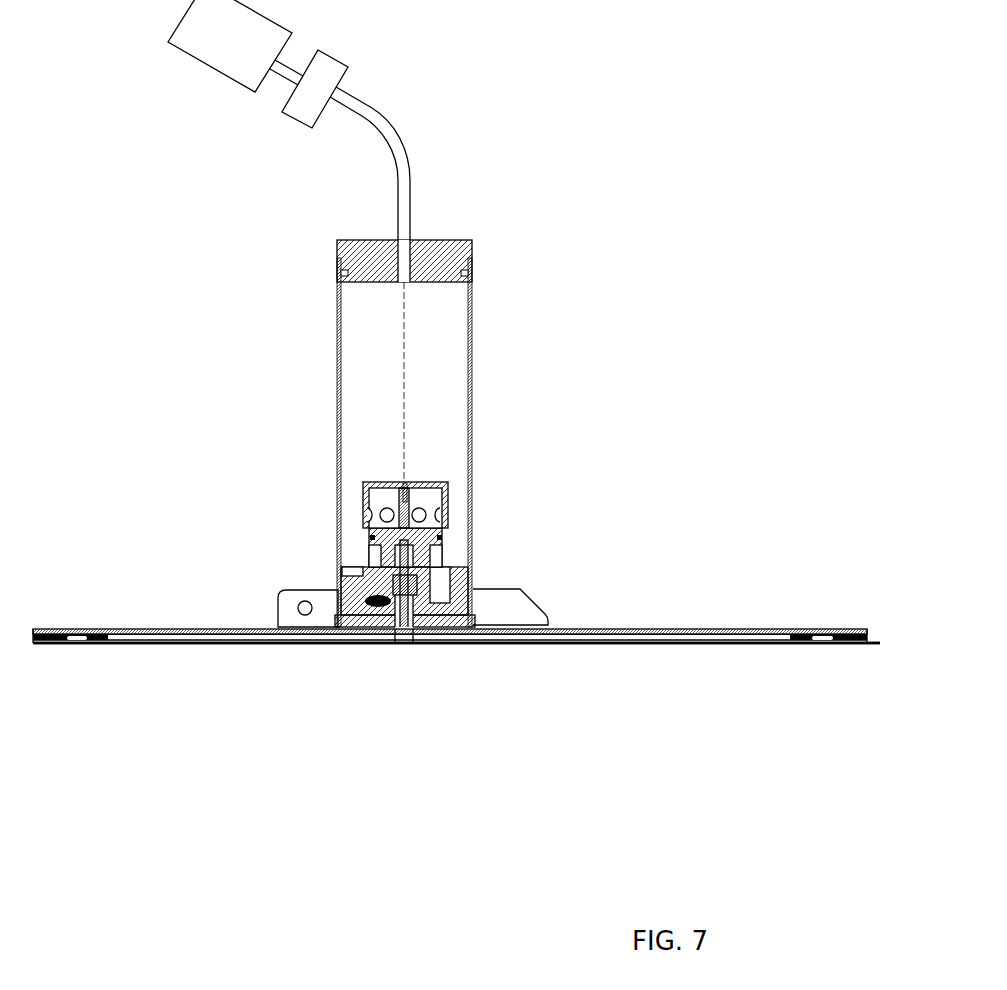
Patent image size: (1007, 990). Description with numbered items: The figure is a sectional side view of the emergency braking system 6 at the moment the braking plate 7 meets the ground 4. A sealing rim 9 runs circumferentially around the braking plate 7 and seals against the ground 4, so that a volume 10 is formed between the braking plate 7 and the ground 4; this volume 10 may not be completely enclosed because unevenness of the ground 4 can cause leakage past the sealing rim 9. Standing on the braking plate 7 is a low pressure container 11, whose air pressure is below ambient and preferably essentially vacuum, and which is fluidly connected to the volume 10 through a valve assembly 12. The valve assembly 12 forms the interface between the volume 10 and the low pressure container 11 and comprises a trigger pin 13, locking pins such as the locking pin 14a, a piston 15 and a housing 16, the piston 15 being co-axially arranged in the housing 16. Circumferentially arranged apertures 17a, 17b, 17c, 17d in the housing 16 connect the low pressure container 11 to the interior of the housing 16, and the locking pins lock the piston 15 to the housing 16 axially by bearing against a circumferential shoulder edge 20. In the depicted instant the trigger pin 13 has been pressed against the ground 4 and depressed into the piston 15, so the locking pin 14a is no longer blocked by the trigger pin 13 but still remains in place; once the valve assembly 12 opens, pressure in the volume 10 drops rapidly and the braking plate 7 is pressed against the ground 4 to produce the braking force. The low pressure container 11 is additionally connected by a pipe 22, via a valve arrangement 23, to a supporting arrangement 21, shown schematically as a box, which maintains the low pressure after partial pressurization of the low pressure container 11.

The ground 4 is at (40, 647).
The emergency braking system 6 is at (131, 270).
The braking plate 7 is at (647, 635).
The sealing rim 9 is at (80, 647).
The volume 10 is at (197, 647).
The low pressure container 11 is at (455, 352).
The valve assembly 12 is at (348, 541).
The trigger pin 13 is at (407, 620).
The locking pin 14a is at (380, 607).
The piston 15 is at (422, 563).
The housing 16 is at (385, 512).
The aperture 17a is at (368, 517).
The aperture 17b is at (383, 483).
The aperture 17c is at (421, 512).
The aperture 17d is at (440, 515).
The shoulder edge 20 is at (360, 595).
The supporting arrangement 21 is at (240, 56).
The pipe 22 is at (397, 162).
The valve arrangement 23 is at (323, 75).